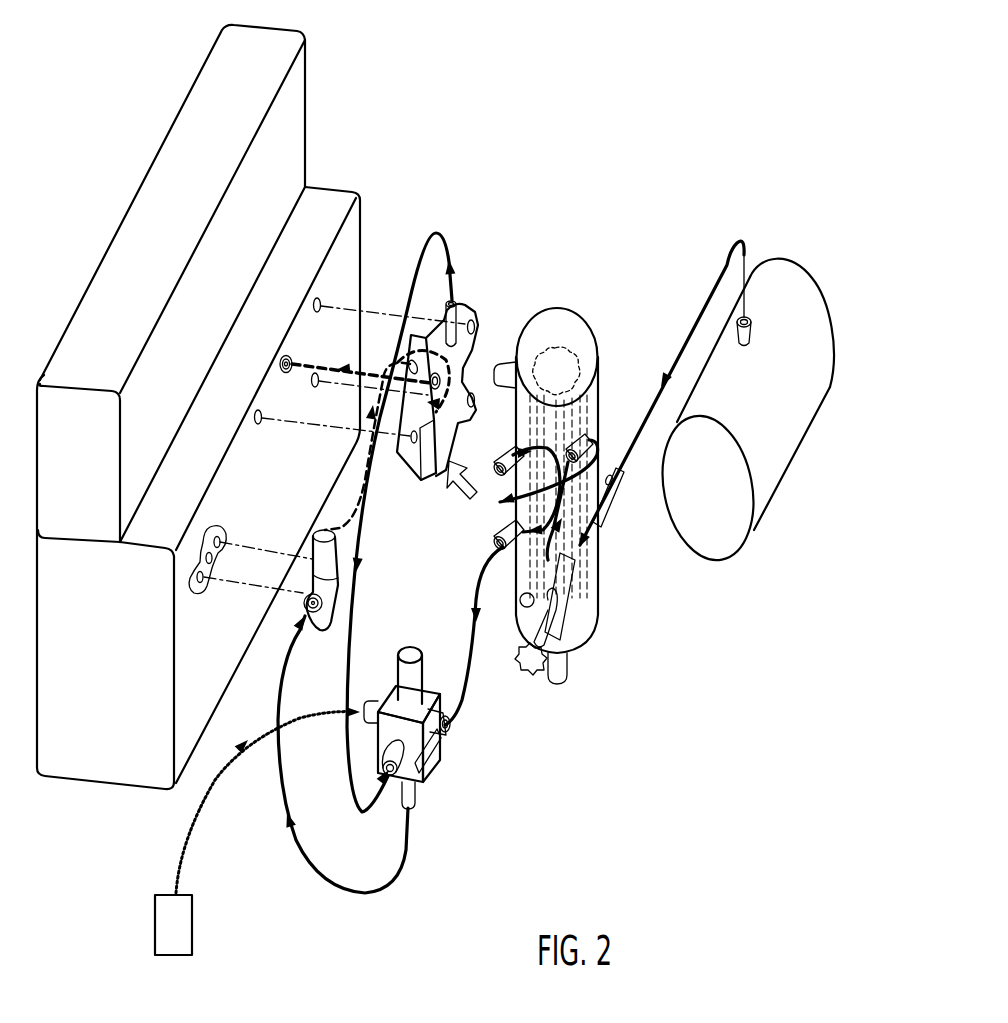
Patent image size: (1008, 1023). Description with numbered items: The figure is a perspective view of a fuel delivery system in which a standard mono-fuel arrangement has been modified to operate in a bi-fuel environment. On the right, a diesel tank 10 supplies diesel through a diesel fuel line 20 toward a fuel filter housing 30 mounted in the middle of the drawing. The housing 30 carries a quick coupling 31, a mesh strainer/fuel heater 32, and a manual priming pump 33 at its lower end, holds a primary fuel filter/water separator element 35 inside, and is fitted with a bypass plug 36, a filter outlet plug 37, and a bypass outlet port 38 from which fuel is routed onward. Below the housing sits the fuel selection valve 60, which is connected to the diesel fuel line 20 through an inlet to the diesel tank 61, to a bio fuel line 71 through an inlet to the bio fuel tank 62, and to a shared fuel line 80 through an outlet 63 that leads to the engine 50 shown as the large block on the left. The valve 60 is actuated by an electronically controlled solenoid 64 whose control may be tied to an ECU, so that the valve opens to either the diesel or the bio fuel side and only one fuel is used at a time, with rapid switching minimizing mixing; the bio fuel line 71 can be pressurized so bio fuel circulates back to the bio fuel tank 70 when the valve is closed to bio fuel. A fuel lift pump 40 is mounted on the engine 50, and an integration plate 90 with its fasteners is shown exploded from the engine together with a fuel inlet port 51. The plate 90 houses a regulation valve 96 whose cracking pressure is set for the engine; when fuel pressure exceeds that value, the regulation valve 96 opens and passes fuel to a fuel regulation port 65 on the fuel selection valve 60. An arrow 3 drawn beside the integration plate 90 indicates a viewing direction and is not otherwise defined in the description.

The section view direction arrow 3 is at (464, 485).
The diesel tank 10 is at (787, 462).
The diesel fuel line 20 is at (708, 298).
The fuel filter housing 30 is at (598, 404).
The quick coupling 31 is at (608, 512).
The mesh strainer/fuel heater 32 is at (566, 671).
The manual priming pump 33 is at (530, 678).
The primary fuel filter/water separator element 35 is at (578, 352).
The bypass plug 36 is at (520, 605).
The filter outlet plug 37 is at (512, 362).
The bypass outlet port 38 is at (496, 543).
The fuel lift pump 40 is at (327, 630).
The engine 50 is at (305, 99).
The fuel inlet port 51 is at (286, 355).
The fuel selection valve 60 is at (436, 772).
The inlet to the diesel tank 61 is at (447, 706).
The inlet to the bio fuel tank 62 is at (377, 700).
The outlet to the engine 63 is at (415, 802).
The electronically controlled solenoid 64 is at (411, 650).
The fuel regulation port 65 is at (392, 788).
The bio fuel tank 70 is at (156, 925).
The bio fuel line 71 is at (214, 786).
The shared fuel line 80 is at (395, 878).
The integration plate 90 is at (428, 486).
The regulation valve 96 is at (452, 300).